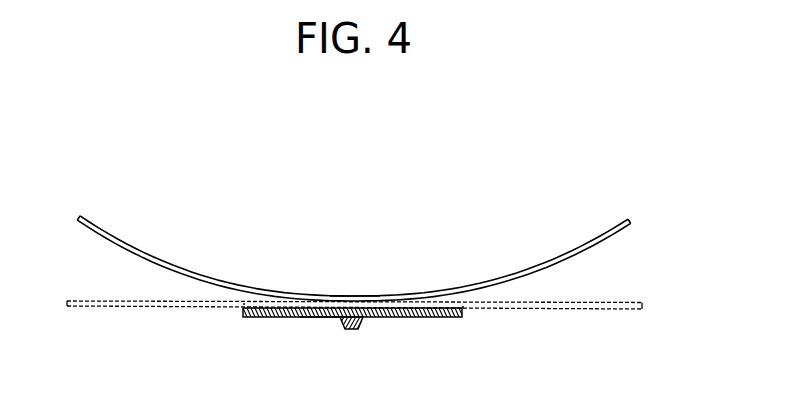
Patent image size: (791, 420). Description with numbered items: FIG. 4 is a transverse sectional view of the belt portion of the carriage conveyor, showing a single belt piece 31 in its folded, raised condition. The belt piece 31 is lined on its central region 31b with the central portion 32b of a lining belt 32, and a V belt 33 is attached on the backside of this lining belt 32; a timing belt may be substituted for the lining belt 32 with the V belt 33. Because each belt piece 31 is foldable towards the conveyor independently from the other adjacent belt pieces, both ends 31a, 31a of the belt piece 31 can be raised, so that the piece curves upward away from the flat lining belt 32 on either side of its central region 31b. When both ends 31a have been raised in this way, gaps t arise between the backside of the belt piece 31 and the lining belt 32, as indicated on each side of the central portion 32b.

The belt piece 31 is at (531, 266).
The end of belt piece 31a is at (92, 211).
The central region of belt piece 31b is at (355, 290).
The lining belt 32 is at (437, 319).
The central portion of lining belt 32b is at (337, 318).
The V belt 33 is at (362, 323).
The gap t is at (240, 305).